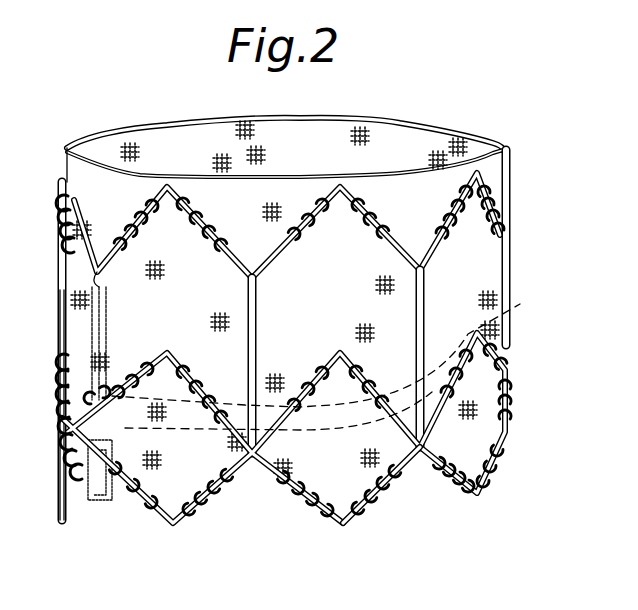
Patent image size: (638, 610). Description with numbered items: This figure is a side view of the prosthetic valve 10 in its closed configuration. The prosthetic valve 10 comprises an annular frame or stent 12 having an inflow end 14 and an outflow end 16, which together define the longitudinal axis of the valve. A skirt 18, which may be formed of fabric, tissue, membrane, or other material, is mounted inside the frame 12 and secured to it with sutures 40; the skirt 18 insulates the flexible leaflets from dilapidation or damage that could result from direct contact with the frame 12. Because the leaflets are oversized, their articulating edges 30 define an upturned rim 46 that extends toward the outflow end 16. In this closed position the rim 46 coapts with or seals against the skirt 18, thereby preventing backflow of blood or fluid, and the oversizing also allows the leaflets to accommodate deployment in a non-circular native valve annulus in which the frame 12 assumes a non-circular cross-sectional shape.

The prosthetic valve 10 is at (111, 100).
The frame 12 is at (512, 275).
The inflow end 14 is at (345, 527).
The outflow end 16 is at (362, 118).
The skirt 18 is at (426, 137).
The articulating edges 30 is at (520, 304).
The sutures 40 is at (505, 208).
The upturned rim 46 is at (405, 462).